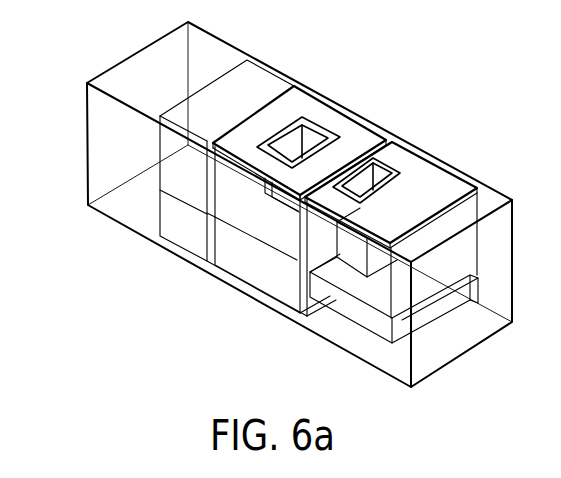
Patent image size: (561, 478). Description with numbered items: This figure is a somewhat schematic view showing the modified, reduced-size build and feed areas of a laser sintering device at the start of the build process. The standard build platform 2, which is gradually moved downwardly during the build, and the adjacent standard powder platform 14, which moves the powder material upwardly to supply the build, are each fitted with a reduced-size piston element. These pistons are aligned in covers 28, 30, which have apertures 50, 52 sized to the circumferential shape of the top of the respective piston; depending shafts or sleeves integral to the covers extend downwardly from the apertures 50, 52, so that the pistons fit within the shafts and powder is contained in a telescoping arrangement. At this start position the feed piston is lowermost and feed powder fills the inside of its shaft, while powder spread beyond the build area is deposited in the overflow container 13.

The overflow container 13 is at (270, 82).
The build platform 2 is at (248, 193).
The powder platform 14 is at (427, 308).
The cover 28 is at (357, 135).
The aperture 50 is at (310, 143).
The cover 30 is at (442, 187).
The aperture 52 is at (380, 178).